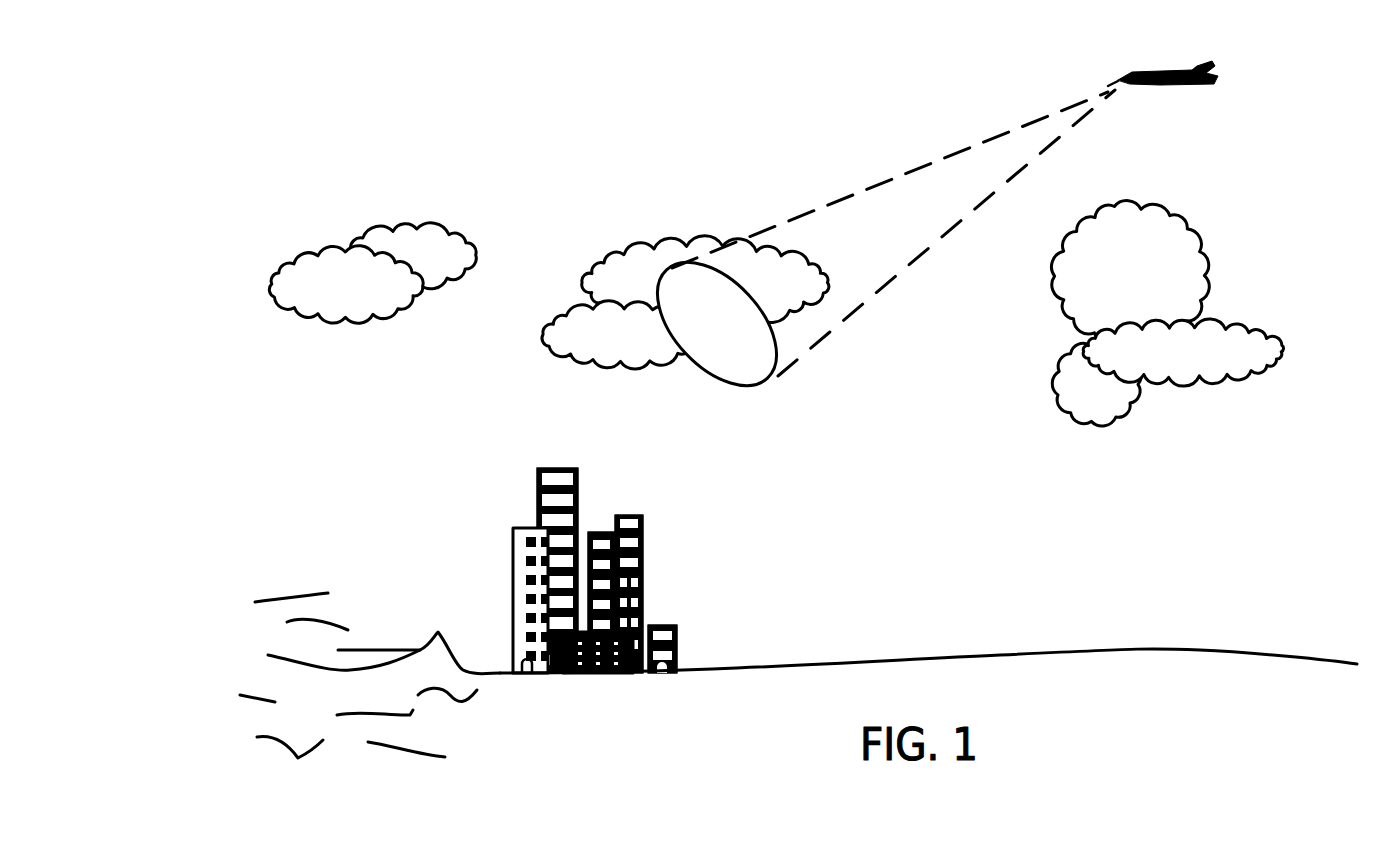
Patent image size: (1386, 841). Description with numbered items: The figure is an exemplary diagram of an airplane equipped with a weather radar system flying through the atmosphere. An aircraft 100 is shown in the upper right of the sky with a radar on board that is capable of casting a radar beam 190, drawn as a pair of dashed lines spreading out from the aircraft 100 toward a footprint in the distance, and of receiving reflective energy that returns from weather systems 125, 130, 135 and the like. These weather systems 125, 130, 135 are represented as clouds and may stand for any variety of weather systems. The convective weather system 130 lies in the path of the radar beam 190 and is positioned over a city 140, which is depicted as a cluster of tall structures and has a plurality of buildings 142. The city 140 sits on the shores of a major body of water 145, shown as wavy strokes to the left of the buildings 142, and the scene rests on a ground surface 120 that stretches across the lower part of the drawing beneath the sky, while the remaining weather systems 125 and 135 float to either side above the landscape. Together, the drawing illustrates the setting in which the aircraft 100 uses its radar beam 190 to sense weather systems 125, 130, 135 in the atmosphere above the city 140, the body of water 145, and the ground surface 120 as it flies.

The aircraft 100 is at (1172, 68).
The ground surface 120 is at (950, 663).
The weather system 125 is at (395, 243).
The convective weather system 130 is at (622, 275).
The weather system 135 is at (1129, 228).
The city 140 is at (657, 474).
The buildings 142 is at (638, 567).
The body of water 145 is at (373, 656).
The radar beam 190 is at (770, 383).